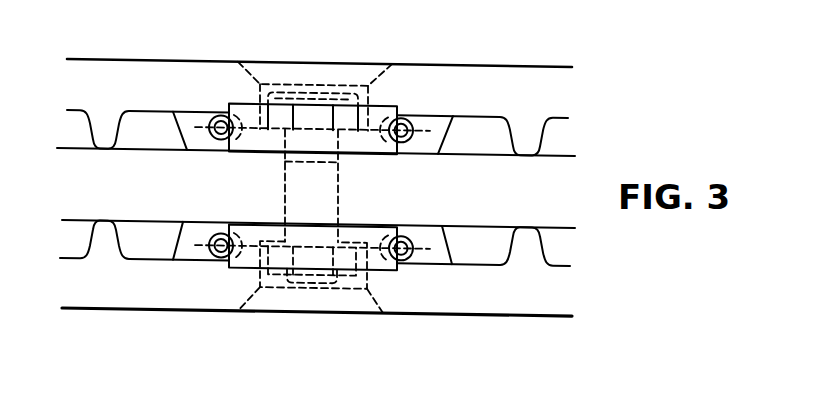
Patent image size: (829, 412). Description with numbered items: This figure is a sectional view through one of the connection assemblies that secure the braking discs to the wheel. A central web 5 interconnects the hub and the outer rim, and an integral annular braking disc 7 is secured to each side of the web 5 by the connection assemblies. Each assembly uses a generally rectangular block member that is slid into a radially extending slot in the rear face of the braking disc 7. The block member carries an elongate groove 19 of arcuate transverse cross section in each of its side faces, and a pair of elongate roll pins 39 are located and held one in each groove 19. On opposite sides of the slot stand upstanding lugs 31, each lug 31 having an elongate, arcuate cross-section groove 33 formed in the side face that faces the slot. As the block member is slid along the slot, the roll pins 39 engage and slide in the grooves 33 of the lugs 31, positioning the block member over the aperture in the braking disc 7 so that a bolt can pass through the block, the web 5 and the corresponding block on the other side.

The web 5 is at (112, 193).
The braking disc 7 is at (513, 75).
The elongate groove 19 is at (212, 259).
The lug 31 is at (190, 127).
The groove 33 is at (382, 296).
The roll pin 39 is at (230, 109).